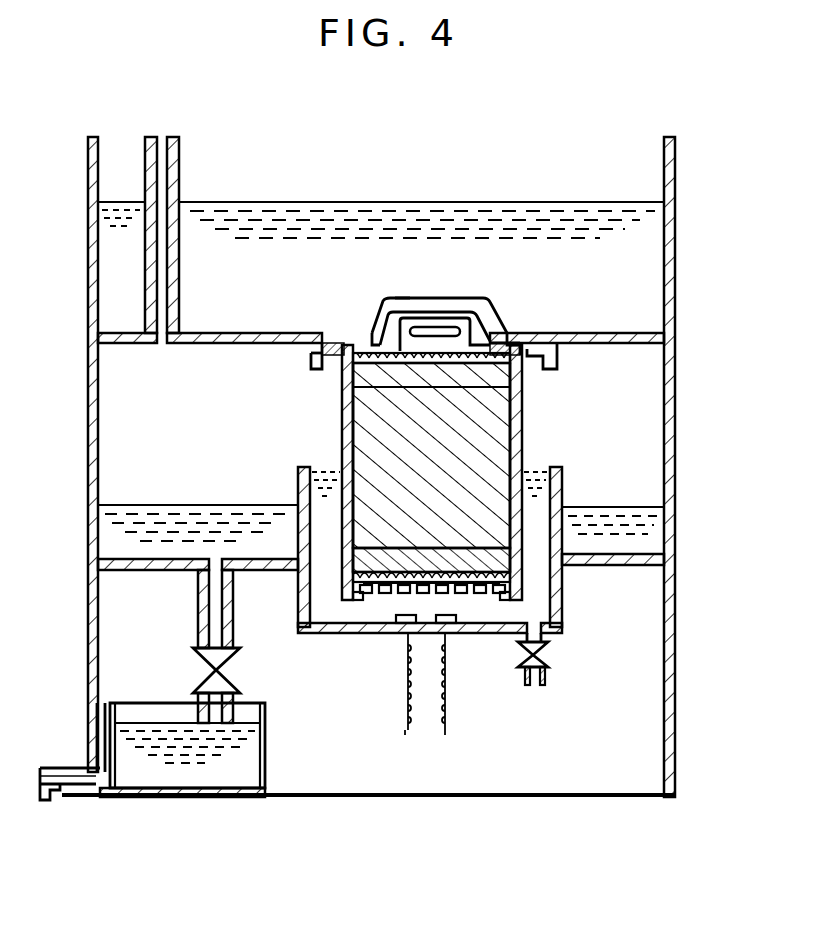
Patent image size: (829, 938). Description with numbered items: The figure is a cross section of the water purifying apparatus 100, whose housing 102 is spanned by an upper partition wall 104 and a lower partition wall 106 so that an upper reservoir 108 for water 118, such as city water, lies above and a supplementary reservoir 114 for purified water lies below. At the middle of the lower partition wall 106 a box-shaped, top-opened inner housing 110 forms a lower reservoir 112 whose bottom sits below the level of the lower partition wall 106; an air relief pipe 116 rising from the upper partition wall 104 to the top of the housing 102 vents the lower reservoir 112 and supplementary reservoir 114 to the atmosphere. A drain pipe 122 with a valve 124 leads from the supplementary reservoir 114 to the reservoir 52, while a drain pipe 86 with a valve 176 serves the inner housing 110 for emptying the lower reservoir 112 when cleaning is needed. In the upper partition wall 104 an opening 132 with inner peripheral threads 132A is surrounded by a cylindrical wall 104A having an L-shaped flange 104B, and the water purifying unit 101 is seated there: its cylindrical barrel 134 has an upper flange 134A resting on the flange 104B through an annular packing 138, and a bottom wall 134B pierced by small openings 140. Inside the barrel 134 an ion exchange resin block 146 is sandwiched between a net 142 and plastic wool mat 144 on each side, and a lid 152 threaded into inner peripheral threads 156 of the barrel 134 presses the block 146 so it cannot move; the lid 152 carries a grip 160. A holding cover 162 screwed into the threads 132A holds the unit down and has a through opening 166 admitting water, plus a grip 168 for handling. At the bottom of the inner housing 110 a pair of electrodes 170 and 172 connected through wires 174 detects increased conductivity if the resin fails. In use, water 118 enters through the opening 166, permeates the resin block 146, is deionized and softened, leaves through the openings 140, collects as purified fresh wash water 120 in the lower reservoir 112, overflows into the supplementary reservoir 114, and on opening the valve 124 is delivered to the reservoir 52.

The reservoir 52 is at (266, 745).
The drain pipe 86 is at (548, 685).
The water purifying apparatus 100 is at (480, 172).
The water purifying unit 101 is at (638, 432).
The housing 102 is at (676, 268).
The upper partition wall 104 is at (625, 333).
The cylindrical wall 104A is at (560, 358).
The L-shaped flange 104B is at (543, 370).
The lower partition wall 106 is at (270, 572).
The upper reservoir 108 is at (586, 251).
The inner housing 110 is at (562, 485).
The lower reservoir 112 is at (549, 551).
The supplementary reservoir 114 is at (626, 535).
The air relief pipe 116 is at (180, 178).
The water 118 is at (390, 200).
The purified fresh wash water 120 is at (325, 465).
The drain pipe 122 is at (198, 621).
The valve 124 is at (240, 668).
The opening 132 is at (330, 336).
The inner peripheral threads 132A is at (535, 338).
The cylindrical barrel 134 is at (522, 420).
The upper flange 134A is at (522, 340).
The bottom wall 134B is at (380, 597).
The annular packing 138 is at (320, 366).
The small openings 140 is at (365, 597).
The net 142 is at (360, 353).
The plastic wool mat 144 is at (345, 405).
The ion exchange resin block 146 is at (522, 440).
The lid 152 is at (505, 330).
The inner peripheral threads 156 is at (495, 345).
The grip 160 is at (440, 318).
The holding cover 162 is at (345, 336).
The through opening 166 is at (380, 345).
The grip 168 is at (418, 300).
The electrode 170 is at (393, 672).
The electrode 172 is at (459, 672).
The wires 174 is at (405, 730).
The valve 176 is at (548, 655).